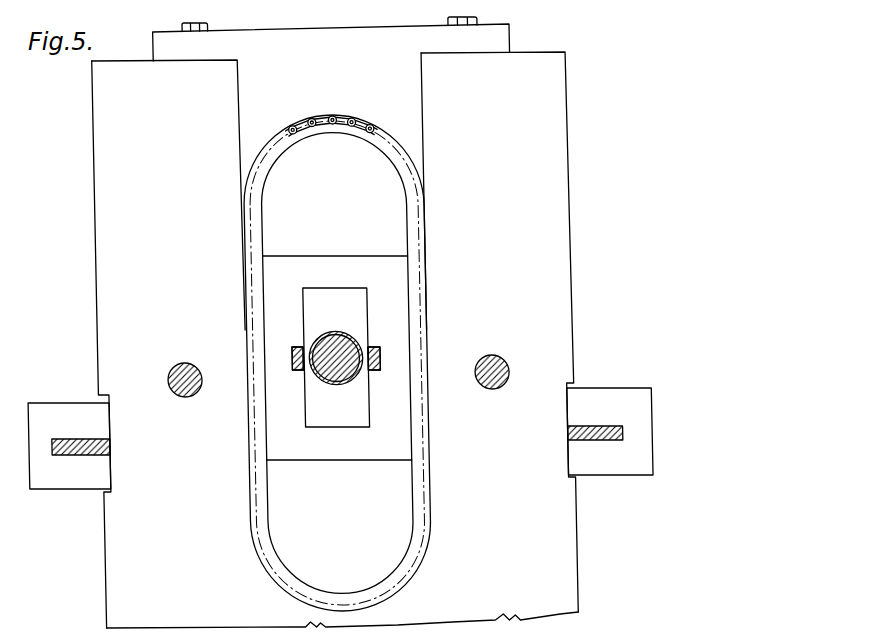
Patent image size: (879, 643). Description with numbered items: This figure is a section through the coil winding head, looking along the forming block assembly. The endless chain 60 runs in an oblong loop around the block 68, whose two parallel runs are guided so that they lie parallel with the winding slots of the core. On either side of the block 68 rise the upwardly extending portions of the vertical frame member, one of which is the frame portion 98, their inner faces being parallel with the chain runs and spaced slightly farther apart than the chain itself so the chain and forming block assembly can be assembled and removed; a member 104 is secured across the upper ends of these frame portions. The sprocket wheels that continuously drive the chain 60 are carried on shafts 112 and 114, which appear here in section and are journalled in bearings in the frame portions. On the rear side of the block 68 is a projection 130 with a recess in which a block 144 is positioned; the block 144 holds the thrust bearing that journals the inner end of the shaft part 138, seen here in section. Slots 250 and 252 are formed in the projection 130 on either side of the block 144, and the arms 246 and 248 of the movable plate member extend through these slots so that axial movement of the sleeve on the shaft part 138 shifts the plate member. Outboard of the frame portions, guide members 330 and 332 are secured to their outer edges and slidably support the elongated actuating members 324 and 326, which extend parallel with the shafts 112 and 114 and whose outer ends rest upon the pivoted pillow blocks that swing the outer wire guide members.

The member 104 is at (514, 32).
The frame portion 98 is at (90, 236).
The block 68 is at (390, 193).
The endless chain 60 is at (331, 118).
The projection 130 is at (295, 255).
The block 144 is at (336, 417).
The shaft part 138 is at (325, 340).
The slot 252 is at (285, 347).
The arm 248 is at (287, 371).
The slot 250 is at (368, 343).
The arm 246 is at (367, 372).
The shaft 114 is at (180, 367).
The shaft 112 is at (494, 366).
The guide member 332 is at (42, 402).
The actuating member 326 is at (66, 457).
The guide member 330 is at (607, 385).
The actuating member 324 is at (614, 432).